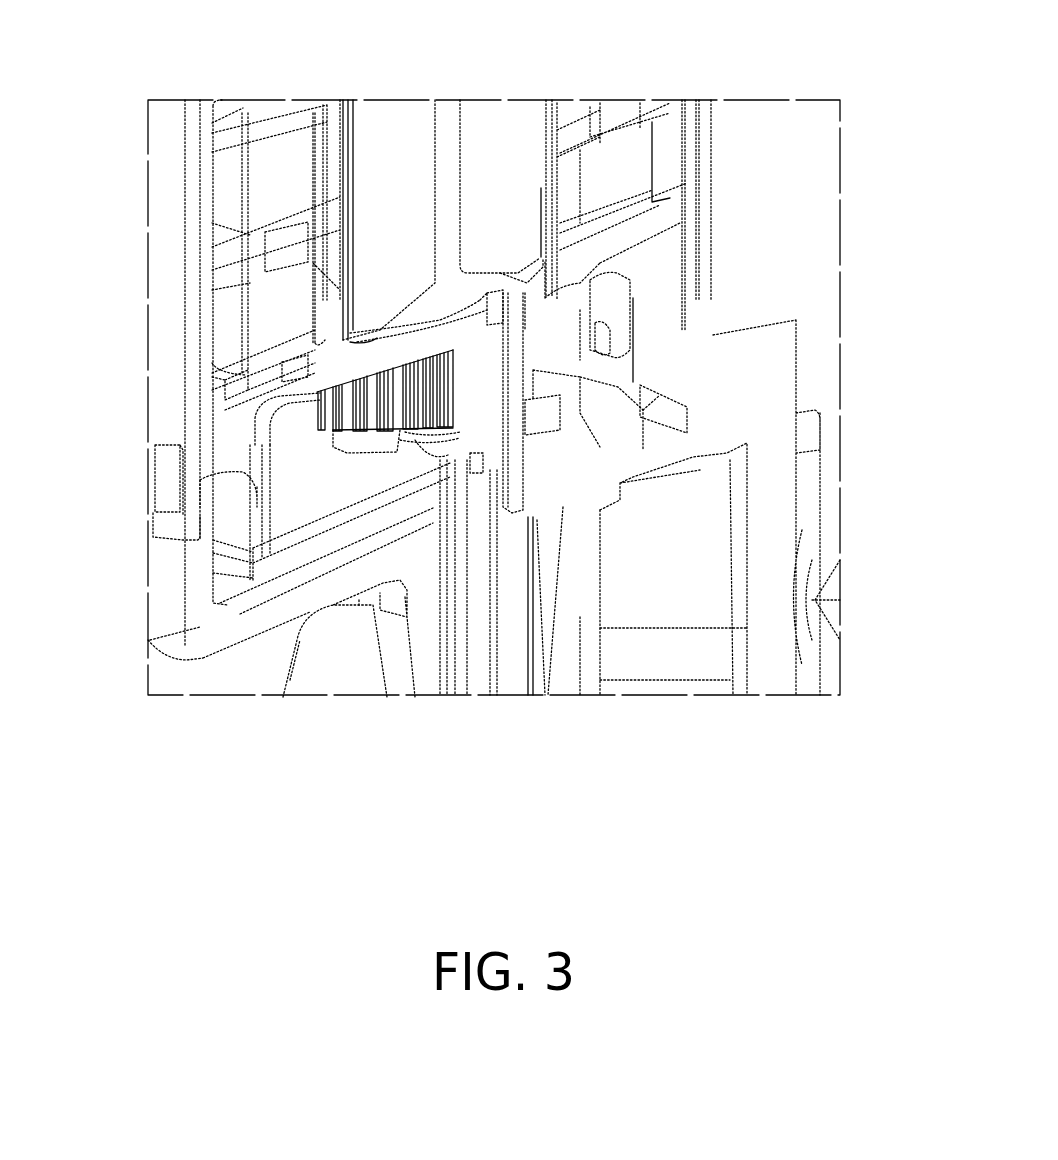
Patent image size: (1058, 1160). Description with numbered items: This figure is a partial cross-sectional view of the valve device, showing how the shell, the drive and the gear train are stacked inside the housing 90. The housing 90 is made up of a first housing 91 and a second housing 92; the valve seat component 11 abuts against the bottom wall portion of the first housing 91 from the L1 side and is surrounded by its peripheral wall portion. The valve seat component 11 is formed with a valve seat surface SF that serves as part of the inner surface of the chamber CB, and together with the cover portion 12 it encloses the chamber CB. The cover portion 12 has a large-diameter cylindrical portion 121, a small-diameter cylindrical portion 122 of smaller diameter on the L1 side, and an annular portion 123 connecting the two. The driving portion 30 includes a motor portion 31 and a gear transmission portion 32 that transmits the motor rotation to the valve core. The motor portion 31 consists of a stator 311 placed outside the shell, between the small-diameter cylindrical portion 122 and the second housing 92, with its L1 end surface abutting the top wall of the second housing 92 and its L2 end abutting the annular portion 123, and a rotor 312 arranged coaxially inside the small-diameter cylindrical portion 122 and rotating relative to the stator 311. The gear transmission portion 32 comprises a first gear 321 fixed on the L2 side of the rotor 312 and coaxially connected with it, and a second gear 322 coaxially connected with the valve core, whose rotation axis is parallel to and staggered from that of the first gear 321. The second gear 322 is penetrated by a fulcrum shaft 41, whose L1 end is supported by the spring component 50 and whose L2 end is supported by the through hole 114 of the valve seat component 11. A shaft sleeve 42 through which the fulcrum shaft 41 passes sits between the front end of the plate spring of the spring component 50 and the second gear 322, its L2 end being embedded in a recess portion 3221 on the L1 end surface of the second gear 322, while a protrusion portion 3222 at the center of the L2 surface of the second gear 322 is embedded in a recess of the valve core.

The driving portion 30 is at (503, 157).
The motor portion 31 is at (597, 172).
The housing 90 is at (708, 138).
The rotor 312 is at (380, 162).
The small-diameter cylindrical portion 122 is at (560, 235).
The annular portion 123 is at (545, 298).
The stator 311 is at (253, 249).
The shaft sleeve 42 is at (530, 345).
The large-diameter cylindrical portion 121 is at (633, 345).
The spring component 50 is at (375, 357).
The second gear 322 is at (563, 362).
The second housing 92 is at (188, 362).
The recess portion 3221 is at (567, 378).
The gear transmission portion 32 is at (400, 390).
The protrusion portion 3222 is at (525, 410).
The first gear 321 is at (325, 420).
The chamber CB is at (305, 457).
The fulcrum shaft 41 is at (512, 480).
The cover portion 12 is at (290, 490).
The valve seat component 11 is at (290, 550).
The first housing 91 is at (200, 627).
The valve seat surface SF is at (447, 450).
The through hole 114 is at (512, 520).